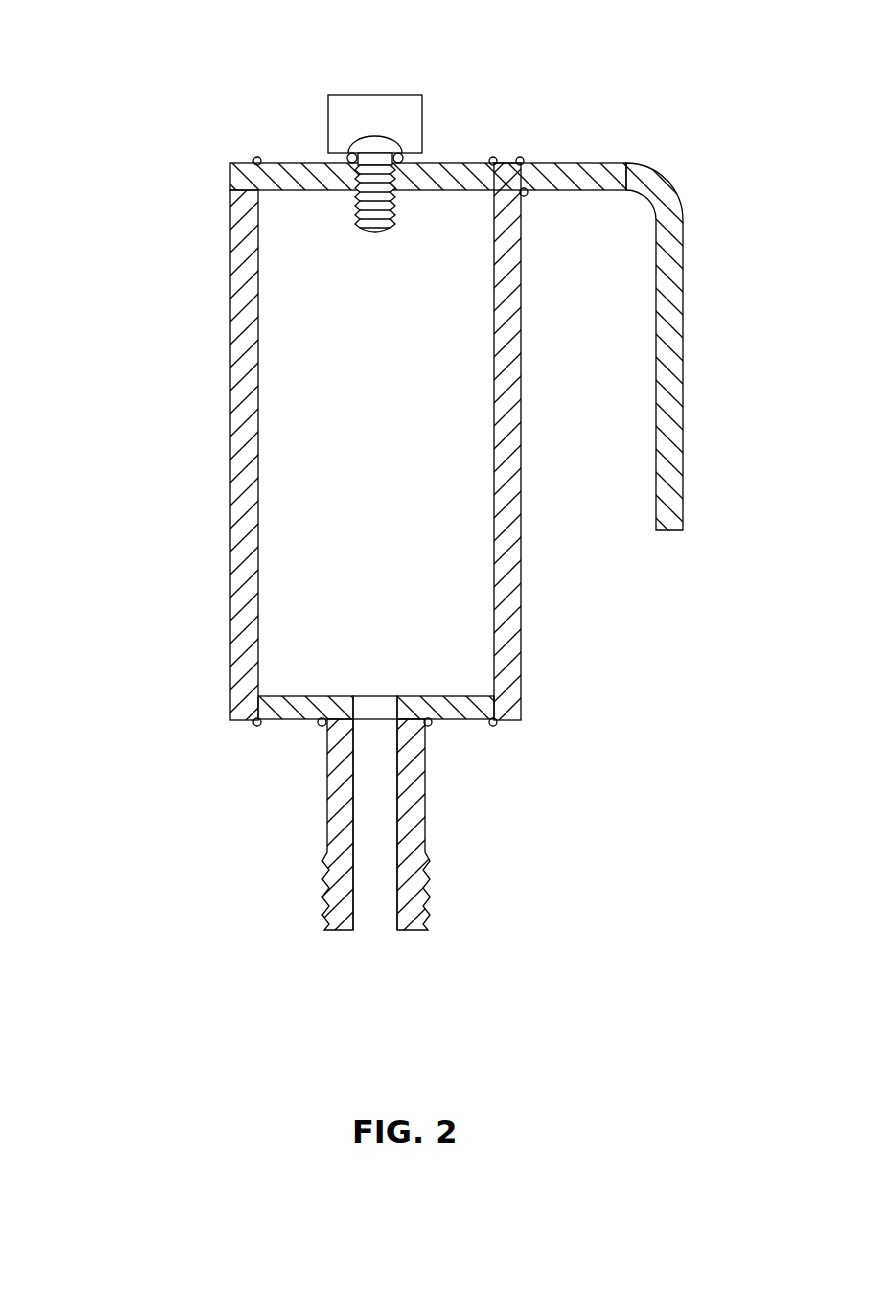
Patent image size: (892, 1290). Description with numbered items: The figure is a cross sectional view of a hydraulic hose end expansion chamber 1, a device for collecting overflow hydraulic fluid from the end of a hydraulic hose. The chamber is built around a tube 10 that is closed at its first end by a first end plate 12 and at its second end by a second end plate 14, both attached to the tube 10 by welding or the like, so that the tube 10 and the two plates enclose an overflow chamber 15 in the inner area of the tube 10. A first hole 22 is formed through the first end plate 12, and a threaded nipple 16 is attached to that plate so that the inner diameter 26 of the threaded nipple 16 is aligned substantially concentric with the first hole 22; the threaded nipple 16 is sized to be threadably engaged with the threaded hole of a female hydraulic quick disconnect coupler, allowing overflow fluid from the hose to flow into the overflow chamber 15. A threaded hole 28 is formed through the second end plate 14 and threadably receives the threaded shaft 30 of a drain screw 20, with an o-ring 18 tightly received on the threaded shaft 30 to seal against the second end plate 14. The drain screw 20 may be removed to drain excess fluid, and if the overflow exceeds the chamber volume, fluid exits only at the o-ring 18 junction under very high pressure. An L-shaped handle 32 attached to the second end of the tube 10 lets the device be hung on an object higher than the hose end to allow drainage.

The hydraulic hose end expansion chamber 1 is at (628, 733).
The tube 10 is at (517, 539).
The first end plate 12 is at (292, 713).
The second end plate 14 is at (460, 165).
The overflow chamber 15 is at (318, 477).
The threaded nipple 16 is at (427, 788).
The o-ring 18 is at (400, 158).
The drain screw 20 is at (375, 95).
The first hole 22 is at (365, 697).
The inner diameter 26 is at (380, 912).
The threaded hole 28 is at (348, 180).
The threaded shaft 30 is at (357, 223).
The L-shaped handle 32 is at (668, 178).